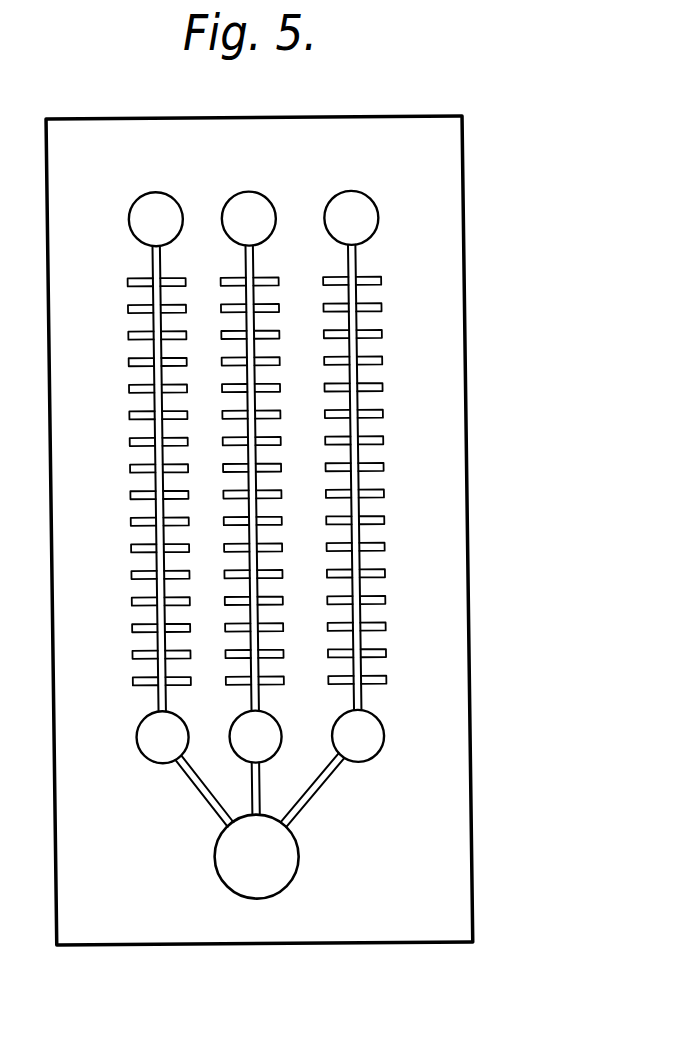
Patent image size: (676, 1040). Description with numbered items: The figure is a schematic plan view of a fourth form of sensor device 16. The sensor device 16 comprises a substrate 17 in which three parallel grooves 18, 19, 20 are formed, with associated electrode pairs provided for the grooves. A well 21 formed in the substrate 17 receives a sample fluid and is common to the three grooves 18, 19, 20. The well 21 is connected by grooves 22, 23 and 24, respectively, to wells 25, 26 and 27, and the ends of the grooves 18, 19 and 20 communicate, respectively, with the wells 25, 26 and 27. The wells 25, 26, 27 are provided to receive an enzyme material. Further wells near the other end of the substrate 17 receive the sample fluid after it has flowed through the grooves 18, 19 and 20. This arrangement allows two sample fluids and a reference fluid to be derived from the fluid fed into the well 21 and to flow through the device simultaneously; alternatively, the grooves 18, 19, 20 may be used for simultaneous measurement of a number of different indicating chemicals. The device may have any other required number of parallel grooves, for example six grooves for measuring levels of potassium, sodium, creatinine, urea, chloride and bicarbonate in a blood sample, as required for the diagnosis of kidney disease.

The sensor device 16 is at (300, 554).
The substrate 17 is at (470, 557).
The groove 18 is at (150, 257).
The groove 19 is at (243, 256).
The groove 20 is at (342, 258).
The well 21 is at (260, 887).
The groove 22 is at (203, 802).
The groove 23 is at (262, 782).
The groove 24 is at (328, 780).
The well 25 is at (142, 760).
The well 26 is at (238, 727).
The well 27 is at (347, 730).